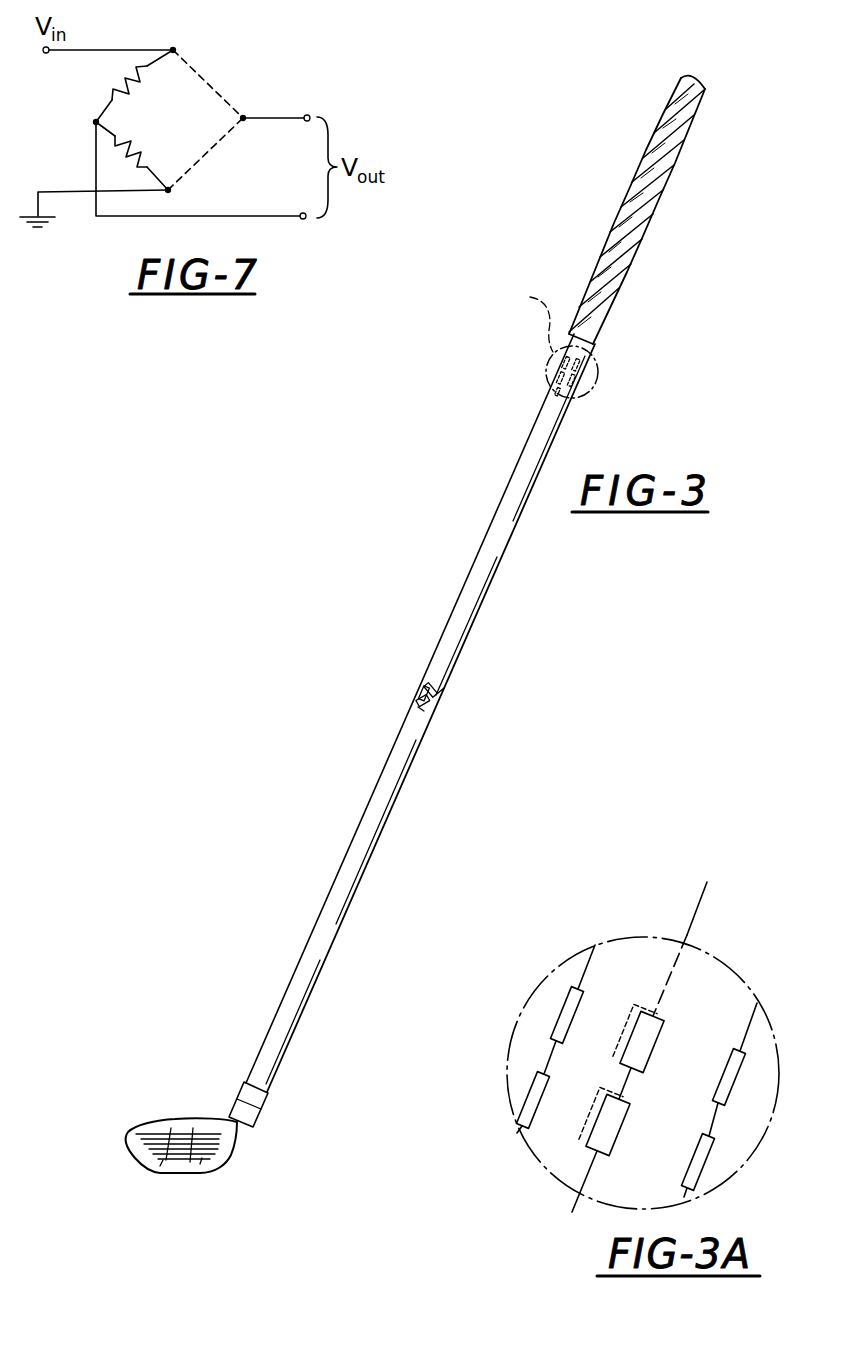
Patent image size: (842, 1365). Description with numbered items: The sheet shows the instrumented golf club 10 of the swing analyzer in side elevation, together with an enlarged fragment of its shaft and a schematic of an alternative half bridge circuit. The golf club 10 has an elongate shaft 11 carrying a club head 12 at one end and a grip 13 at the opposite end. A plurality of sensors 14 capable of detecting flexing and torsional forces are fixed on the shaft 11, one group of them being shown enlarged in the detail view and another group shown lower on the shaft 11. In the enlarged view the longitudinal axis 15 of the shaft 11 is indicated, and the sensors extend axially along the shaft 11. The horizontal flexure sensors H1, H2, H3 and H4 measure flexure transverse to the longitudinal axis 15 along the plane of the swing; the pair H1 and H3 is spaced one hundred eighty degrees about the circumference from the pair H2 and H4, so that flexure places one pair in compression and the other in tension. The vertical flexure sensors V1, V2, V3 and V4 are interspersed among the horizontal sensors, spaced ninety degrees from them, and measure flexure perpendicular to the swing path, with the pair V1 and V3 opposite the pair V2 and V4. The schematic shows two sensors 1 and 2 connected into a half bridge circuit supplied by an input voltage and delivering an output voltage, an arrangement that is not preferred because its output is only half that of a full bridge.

In FIG. 7, the sensor 1 is at (134, 86).
In FIG. 7, the sensor 2 is at (132, 156).
In FIG. 3, the golf club 10 is at (402, 624).
In FIG. 3, the shaft 11 is at (477, 609).
In FIG. 3, the club head 12 is at (145, 1120).
In FIG. 3, the grip 13 is at (641, 168).
In FIG. 3, the sensors 14 is at (533, 377).
In FIG. 3A, the longitudinal axis 15 is at (687, 930).
In FIG. 3A, the vertical flexure sensor V1 is at (556, 1015).
In FIG. 3A, the vertical flexure sensor V2 is at (737, 1078).
In FIG. 3A, the vertical flexure sensor V3 is at (539, 1109).
In FIG. 3A, the vertical flexure sensor V4 is at (712, 1158).
In FIG. 3A, the horizontal flexure sensor H1 is at (655, 1041).
In FIG. 3A, the horizontal flexure sensor H2 is at (633, 1014).
In FIG. 3A, the horizontal flexure sensor H3 is at (616, 1130).
In FIG. 3A, the horizontal flexure sensor H4 is at (594, 1103).